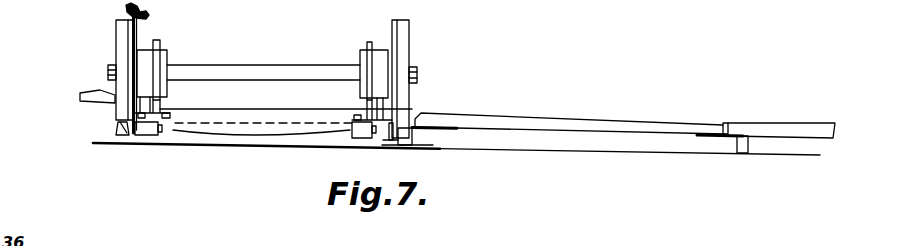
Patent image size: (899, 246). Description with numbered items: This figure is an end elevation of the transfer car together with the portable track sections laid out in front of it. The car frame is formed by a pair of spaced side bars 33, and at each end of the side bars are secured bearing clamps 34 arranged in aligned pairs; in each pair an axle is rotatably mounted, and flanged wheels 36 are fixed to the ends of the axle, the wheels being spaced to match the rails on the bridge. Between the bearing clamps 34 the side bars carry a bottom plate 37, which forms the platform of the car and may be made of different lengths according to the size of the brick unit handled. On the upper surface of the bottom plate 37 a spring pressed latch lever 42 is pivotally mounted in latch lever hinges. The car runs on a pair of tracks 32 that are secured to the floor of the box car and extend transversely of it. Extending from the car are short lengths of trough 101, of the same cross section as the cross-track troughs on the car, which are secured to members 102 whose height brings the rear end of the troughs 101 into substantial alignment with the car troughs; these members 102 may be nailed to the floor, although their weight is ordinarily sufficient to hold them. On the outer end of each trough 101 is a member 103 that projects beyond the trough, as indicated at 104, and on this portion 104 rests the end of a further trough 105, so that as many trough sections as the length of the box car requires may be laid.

The tracks 32 is at (122, 130).
The side bars 33 is at (147, 133).
The bearing clamps 34 is at (145, 55).
The flanged wheels 36 is at (113, 28).
The bottom plate 37 is at (243, 117).
The spring pressed latch lever 42 is at (93, 93).
The short lengths of trough 101 is at (660, 106).
The members 102 is at (427, 137).
The member 103 is at (760, 106).
The extending portion 104 is at (740, 136).
The other troughs 105 is at (880, 108).